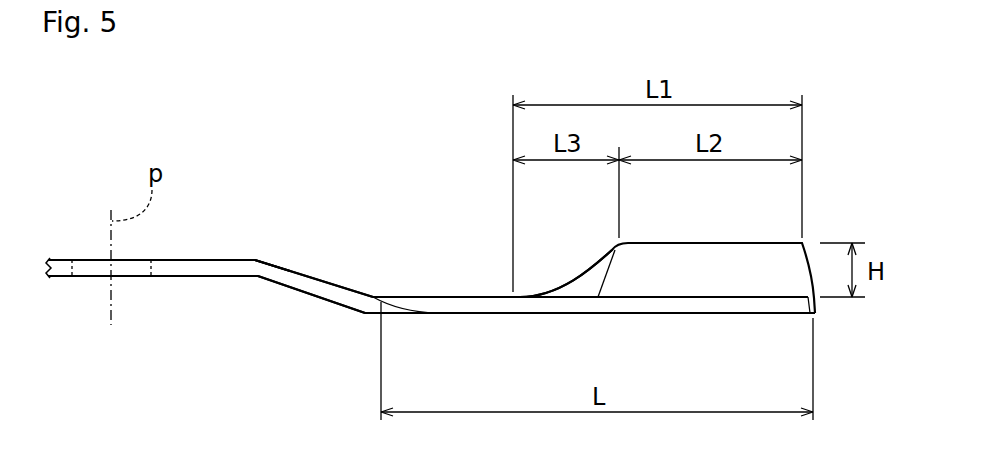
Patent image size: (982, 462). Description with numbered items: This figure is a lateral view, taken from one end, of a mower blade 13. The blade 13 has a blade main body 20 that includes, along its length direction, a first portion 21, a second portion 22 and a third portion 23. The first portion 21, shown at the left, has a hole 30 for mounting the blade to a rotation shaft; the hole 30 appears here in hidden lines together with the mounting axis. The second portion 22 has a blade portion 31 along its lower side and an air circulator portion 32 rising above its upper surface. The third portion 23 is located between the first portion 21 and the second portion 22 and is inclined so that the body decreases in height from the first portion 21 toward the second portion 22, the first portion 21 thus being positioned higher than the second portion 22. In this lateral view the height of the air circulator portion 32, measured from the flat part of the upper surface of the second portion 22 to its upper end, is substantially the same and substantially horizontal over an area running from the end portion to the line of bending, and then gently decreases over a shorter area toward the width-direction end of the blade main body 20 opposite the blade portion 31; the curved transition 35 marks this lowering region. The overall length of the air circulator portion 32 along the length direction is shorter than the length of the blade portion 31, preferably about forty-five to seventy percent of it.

The mower blade 13 is at (282, 262).
The blade main body 20 is at (430, 276).
The first portion 21 is at (231, 259).
The second portion 22 is at (457, 296).
The third portion 23 is at (322, 280).
The hole 30 is at (148, 263).
The blade portion 31 is at (720, 305).
The air circulator portion 32 is at (677, 268).
The curved wall 35 is at (610, 272).